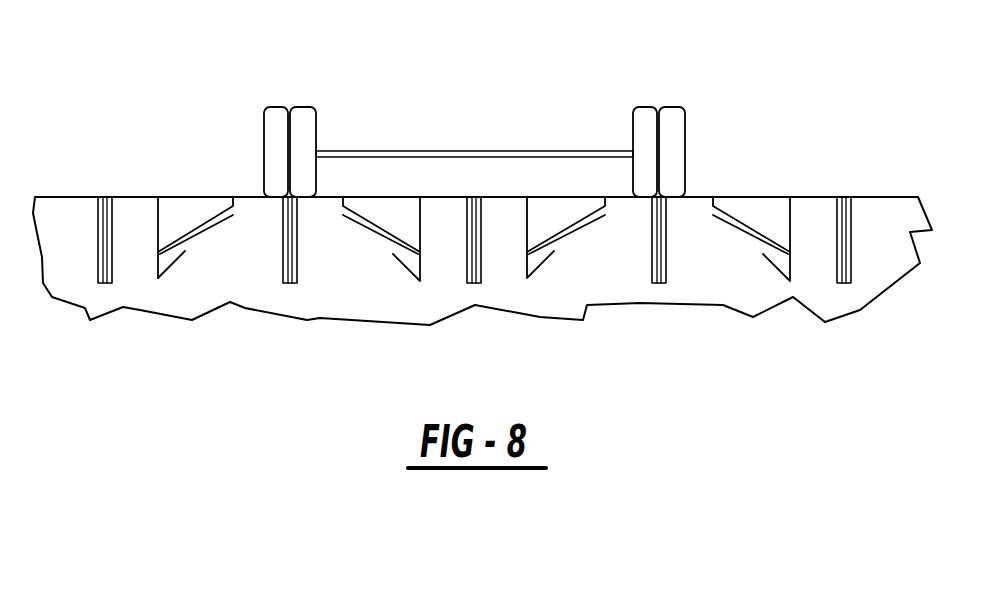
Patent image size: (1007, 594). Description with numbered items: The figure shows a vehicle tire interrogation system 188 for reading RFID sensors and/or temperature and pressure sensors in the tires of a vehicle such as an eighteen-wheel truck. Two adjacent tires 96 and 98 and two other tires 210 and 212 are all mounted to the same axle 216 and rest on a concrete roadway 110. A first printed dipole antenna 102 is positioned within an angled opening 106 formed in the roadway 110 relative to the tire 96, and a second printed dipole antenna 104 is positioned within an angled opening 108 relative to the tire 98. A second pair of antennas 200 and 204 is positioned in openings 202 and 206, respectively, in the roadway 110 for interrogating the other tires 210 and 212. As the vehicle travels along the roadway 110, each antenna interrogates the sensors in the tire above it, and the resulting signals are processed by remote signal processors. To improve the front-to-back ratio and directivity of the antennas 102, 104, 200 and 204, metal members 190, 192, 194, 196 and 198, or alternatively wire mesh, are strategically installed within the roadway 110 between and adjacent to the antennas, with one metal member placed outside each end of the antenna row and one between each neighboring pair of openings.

The tire 96 is at (272, 115).
The tire 98 is at (302, 128).
The axle 216 is at (457, 150).
The tire 210 is at (637, 113).
The tire 212 is at (673, 118).
The vehicle tire interrogation system 188 is at (720, 146).
The roadway 110 is at (897, 222).
The metal member 190 is at (101, 227).
The metal member 192 is at (290, 258).
The metal member 194 is at (478, 213).
The metal member 196 is at (662, 267).
The metal member 198 is at (847, 255).
The angled opening 106 is at (182, 213).
The angled opening 108 is at (383, 215).
The opening 202 is at (553, 213).
The opening 206 is at (770, 217).
The first printed dipole antenna 102 is at (185, 247).
The second printed dipole antenna 104 is at (402, 252).
The antenna 200 is at (547, 250).
The antenna 204 is at (765, 247).